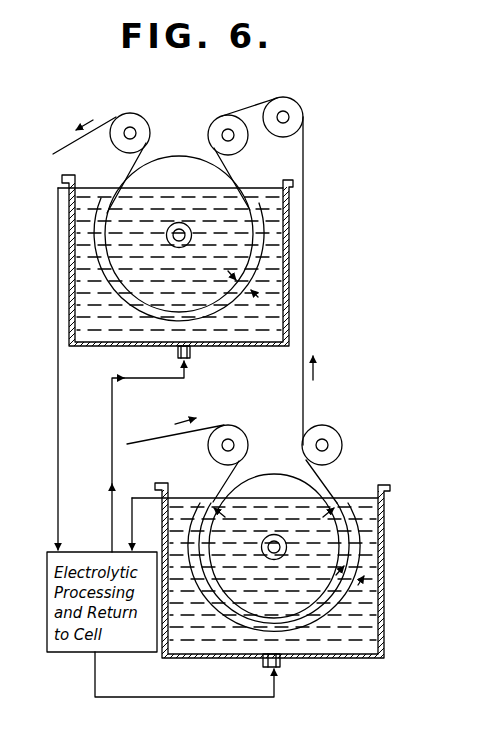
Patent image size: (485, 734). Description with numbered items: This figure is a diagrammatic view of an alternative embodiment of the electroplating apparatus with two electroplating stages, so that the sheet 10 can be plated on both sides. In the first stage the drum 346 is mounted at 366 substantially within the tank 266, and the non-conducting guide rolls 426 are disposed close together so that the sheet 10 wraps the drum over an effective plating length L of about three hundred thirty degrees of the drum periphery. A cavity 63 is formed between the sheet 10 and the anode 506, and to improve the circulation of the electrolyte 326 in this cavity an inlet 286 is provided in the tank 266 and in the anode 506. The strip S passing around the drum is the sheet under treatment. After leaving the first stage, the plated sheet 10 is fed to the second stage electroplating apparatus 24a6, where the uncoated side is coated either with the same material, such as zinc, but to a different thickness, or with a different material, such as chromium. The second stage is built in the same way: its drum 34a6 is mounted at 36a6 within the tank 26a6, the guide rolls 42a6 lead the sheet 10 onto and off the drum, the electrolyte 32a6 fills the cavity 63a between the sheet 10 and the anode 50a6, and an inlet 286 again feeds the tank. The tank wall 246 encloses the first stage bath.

The sheet 10 is at (305, 153).
The non-conducting guide rolls 42a6 is at (128, 114).
The second stage electroplating apparatus 24a6 is at (294, 239).
The tank 26a6 is at (289, 305).
The drum 34a6 is at (172, 278).
The drum mounting 36a6 is at (186, 229).
The sheet S is at (243, 282).
The cavity 63a is at (234, 296).
The anode 50a6 is at (120, 302).
The inlet 286 is at (177, 353).
The electrolyte 32a6 is at (232, 338).
The non-conducting guide rolls 426 is at (234, 427).
The drum 346 is at (268, 476).
The drum mounting 366 is at (275, 560).
The tank (lower cell) 246 is at (388, 531).
The tank 266 is at (385, 600).
The cavity 63 is at (352, 558).
The effective plating length L is at (274, 613).
The electrolyte 326 is at (187, 646).
The anode 506 is at (313, 627).